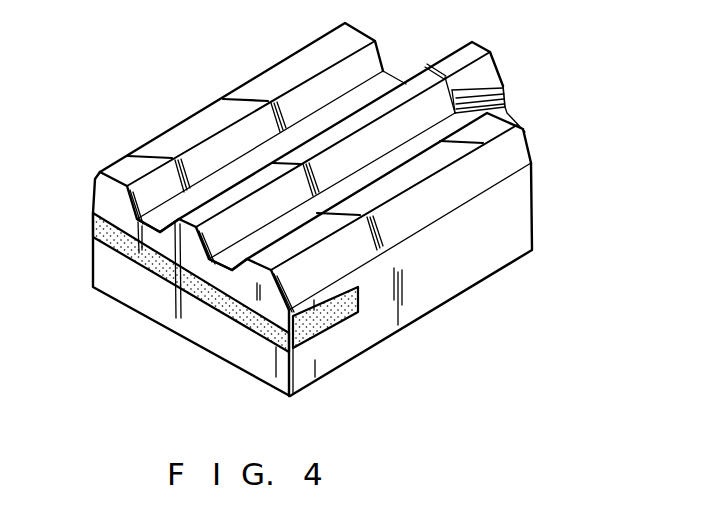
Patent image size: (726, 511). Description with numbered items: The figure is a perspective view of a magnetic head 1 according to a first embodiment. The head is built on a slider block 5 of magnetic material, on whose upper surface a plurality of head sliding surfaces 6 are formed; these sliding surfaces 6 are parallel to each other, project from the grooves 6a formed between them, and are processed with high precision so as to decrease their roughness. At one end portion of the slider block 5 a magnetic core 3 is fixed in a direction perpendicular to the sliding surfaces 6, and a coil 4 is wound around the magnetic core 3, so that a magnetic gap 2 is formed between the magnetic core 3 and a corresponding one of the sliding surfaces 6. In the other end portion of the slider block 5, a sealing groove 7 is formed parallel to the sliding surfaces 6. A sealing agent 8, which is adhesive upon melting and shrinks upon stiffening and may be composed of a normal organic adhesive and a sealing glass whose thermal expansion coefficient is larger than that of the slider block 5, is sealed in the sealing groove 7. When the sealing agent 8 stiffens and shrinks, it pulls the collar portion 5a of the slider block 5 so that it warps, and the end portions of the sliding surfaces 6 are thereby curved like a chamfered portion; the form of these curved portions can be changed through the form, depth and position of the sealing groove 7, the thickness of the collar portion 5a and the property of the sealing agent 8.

The optical device 1 is at (274, 47).
The magnetic gap 2 is at (441, 69).
The magnetic core 3 is at (496, 61).
The coil 4 is at (503, 100).
The slider block 5 is at (458, 286).
The collar portion 5a is at (108, 192).
The head sliding surfaces 6 is at (177, 133).
The grooves 6a is at (158, 222).
The sealing groove 7 is at (338, 312).
The sealing agent 8 is at (174, 270).